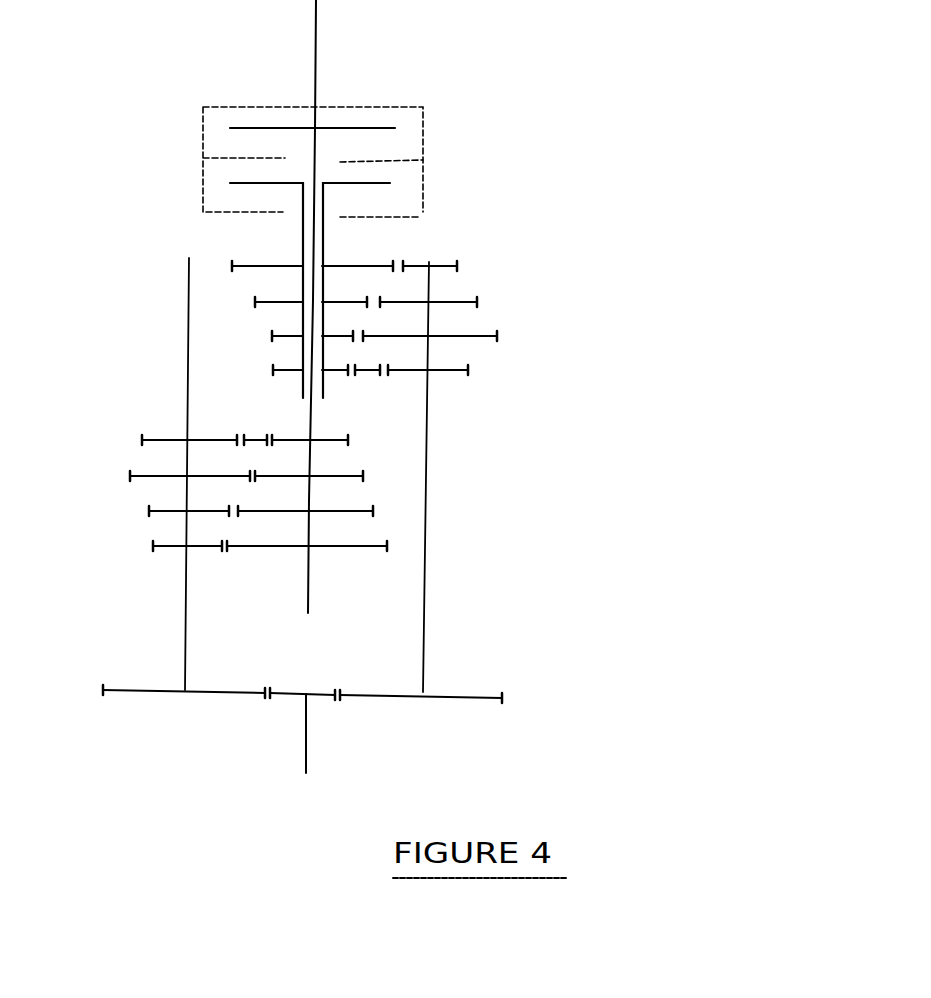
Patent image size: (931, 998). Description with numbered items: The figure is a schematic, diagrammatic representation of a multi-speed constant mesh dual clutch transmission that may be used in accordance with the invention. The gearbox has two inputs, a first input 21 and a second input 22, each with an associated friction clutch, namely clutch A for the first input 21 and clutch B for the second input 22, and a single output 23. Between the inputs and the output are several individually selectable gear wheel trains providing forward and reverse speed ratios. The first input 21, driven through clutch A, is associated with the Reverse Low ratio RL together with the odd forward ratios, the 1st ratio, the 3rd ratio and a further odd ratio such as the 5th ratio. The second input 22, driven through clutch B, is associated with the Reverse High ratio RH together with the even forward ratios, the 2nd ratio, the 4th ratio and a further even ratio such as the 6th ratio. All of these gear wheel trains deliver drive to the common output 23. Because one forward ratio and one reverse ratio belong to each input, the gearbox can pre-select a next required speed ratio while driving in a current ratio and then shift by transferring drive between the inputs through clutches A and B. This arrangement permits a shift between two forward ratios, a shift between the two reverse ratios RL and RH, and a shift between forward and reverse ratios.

The friction clutch A is at (364, 126).
The first input 21 is at (317, 132).
The friction clutch B is at (395, 183).
The second input 22 is at (323, 193).
The sixth gear ratio 6th is at (457, 264).
The fourth gear ratio 4th is at (477, 300).
The second gear ratio 2nd is at (497, 334).
The Reverse High ratio RH is at (470, 374).
The Reverse Low ratio RL is at (150, 437).
The first gear ratio 1st is at (135, 478).
The third gear ratio 3rd is at (150, 512).
The fifth gear ratio 5th is at (160, 547).
The output 23 is at (310, 742).